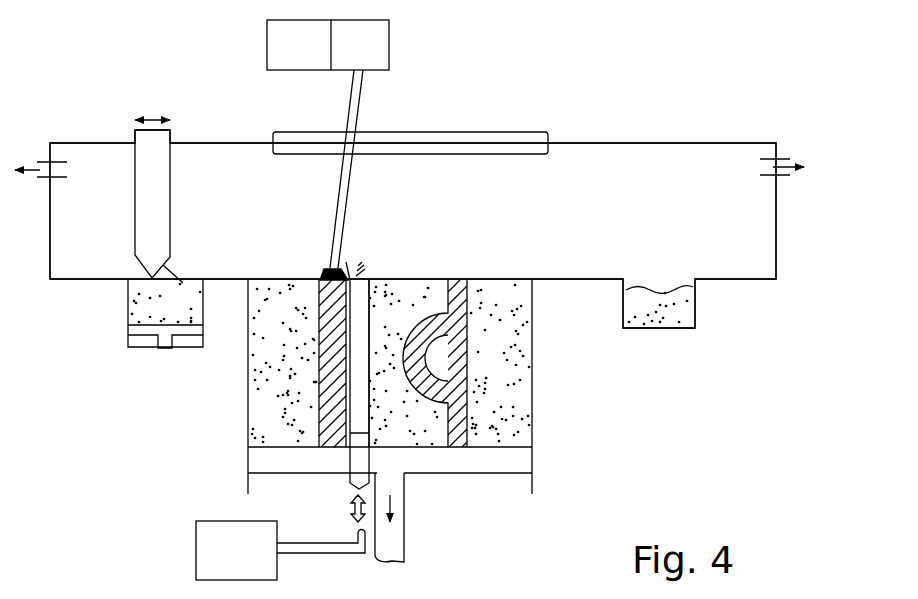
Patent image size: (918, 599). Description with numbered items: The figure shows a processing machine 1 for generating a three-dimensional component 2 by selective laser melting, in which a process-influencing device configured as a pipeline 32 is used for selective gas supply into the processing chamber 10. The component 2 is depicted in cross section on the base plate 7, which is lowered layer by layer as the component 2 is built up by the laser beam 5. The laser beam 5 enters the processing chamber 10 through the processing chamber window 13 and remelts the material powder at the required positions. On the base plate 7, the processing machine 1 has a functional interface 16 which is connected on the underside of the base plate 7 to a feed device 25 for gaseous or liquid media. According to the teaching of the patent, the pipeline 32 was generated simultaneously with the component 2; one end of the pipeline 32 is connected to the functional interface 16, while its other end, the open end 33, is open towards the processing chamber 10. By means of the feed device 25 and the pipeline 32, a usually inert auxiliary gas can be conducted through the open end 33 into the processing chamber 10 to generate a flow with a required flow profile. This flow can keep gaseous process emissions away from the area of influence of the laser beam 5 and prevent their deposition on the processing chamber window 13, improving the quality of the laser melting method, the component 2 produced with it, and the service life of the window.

The processing machine 1 is at (114, 73).
The three-dimensional component 2 is at (320, 372).
The laser beam 5 is at (362, 91).
The base plate 7 is at (276, 460).
The processing chamber 10 is at (672, 186).
The processing chamber window 13 is at (508, 146).
The functional interface 16 is at (353, 462).
The feed device 25 is at (197, 547).
The pipeline 32 is at (372, 305).
The open end 33 is at (358, 273).